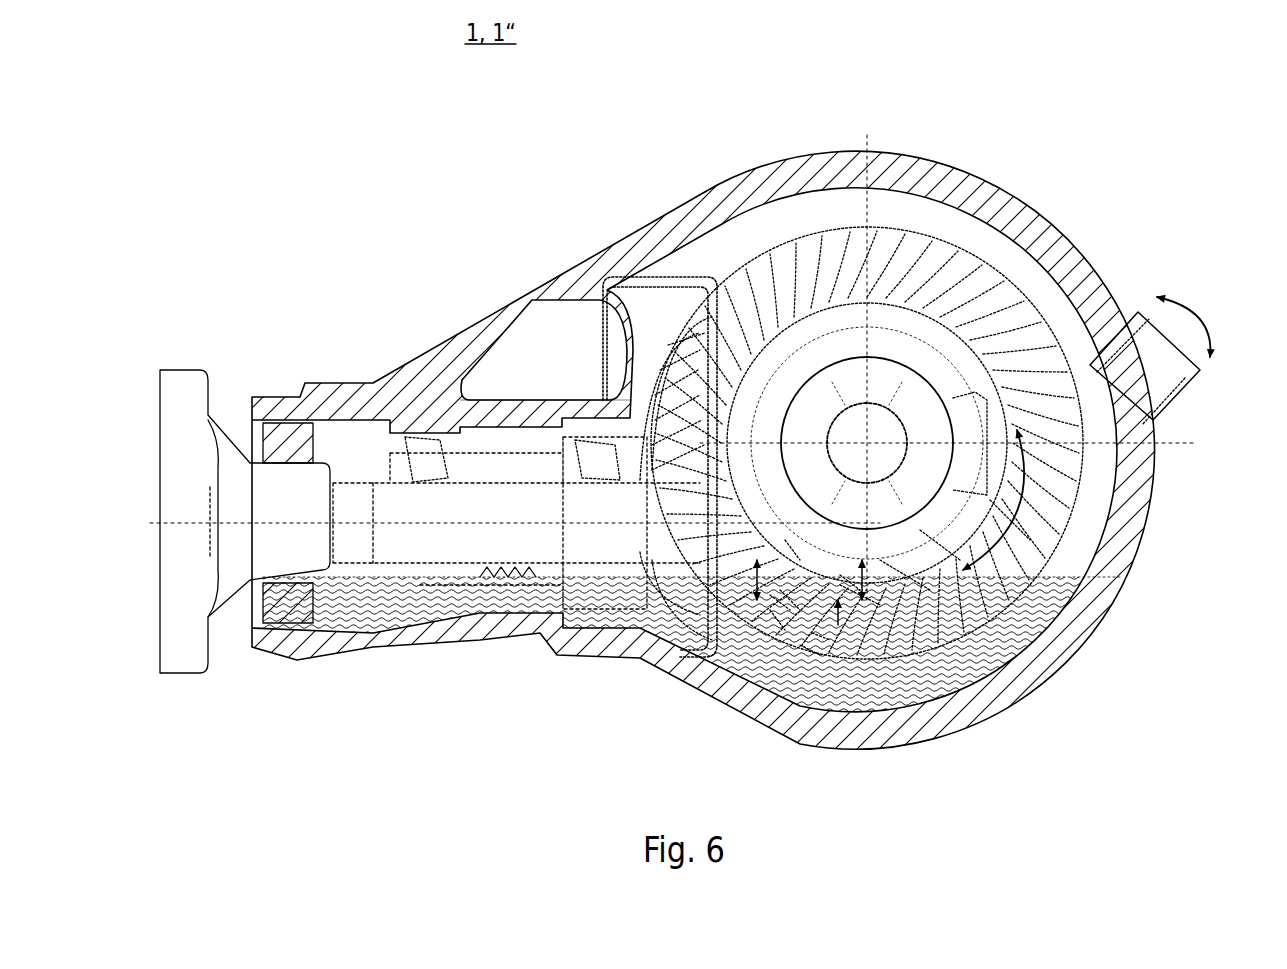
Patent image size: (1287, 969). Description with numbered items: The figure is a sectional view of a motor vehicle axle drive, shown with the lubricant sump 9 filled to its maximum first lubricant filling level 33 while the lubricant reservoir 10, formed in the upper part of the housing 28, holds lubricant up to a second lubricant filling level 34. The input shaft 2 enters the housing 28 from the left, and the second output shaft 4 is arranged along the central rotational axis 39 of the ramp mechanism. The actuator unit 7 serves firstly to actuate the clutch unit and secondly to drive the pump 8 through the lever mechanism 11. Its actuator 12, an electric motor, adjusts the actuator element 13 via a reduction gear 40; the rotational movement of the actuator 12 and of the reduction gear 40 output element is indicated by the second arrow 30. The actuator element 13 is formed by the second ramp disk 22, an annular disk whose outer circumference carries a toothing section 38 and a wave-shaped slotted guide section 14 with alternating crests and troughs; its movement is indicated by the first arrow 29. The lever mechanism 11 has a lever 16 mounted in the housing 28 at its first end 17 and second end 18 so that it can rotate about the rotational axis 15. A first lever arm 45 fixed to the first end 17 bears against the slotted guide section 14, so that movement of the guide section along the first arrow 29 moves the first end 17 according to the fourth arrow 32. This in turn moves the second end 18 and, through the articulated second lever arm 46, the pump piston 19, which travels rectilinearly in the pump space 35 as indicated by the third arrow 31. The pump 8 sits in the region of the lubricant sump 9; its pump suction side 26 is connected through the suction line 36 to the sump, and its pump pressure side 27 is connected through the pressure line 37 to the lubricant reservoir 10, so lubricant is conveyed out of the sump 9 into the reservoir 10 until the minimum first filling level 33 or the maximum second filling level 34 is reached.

The input shaft 2 is at (492, 530).
The second output shaft 4 is at (887, 457).
The actuator unit 7 is at (1190, 408).
The pump 8 is at (822, 635).
The lubricant sump 9 is at (757, 565).
The lubricant reservoir 10 is at (572, 345).
The lever mechanism 11 is at (838, 615).
The actuator 12 is at (1140, 350).
The actuator element 13 is at (1115, 587).
The slotted guide section 14 is at (895, 570).
The rotational axis 15 is at (855, 595).
The lever 16 is at (820, 583).
The first end 17 is at (957, 663).
The second end 18 is at (746, 330).
The pump piston 19 is at (778, 620).
The second ramp disk 22 is at (908, 403).
The pump suction side 26 is at (790, 600).
The pump pressure side 27 is at (777, 620).
The housing 28 is at (1100, 292).
The first arrow 29 is at (1030, 505).
The second arrow 30 is at (1197, 317).
The third arrow 31 is at (745, 600).
The fourth arrow 32 is at (860, 585).
The first lubricant filling level 33 is at (503, 573).
The second lubricant filling level 34 is at (530, 400).
The pump space 35 is at (777, 600).
The suction line 36 is at (812, 650).
The pressure line 37 is at (760, 625).
The toothing section 38 is at (1012, 518).
The central rotational axis 39 is at (868, 445).
The reduction gear 40 is at (935, 530).
The first lever arm 45 is at (862, 590).
The second lever arm 46 is at (790, 548).